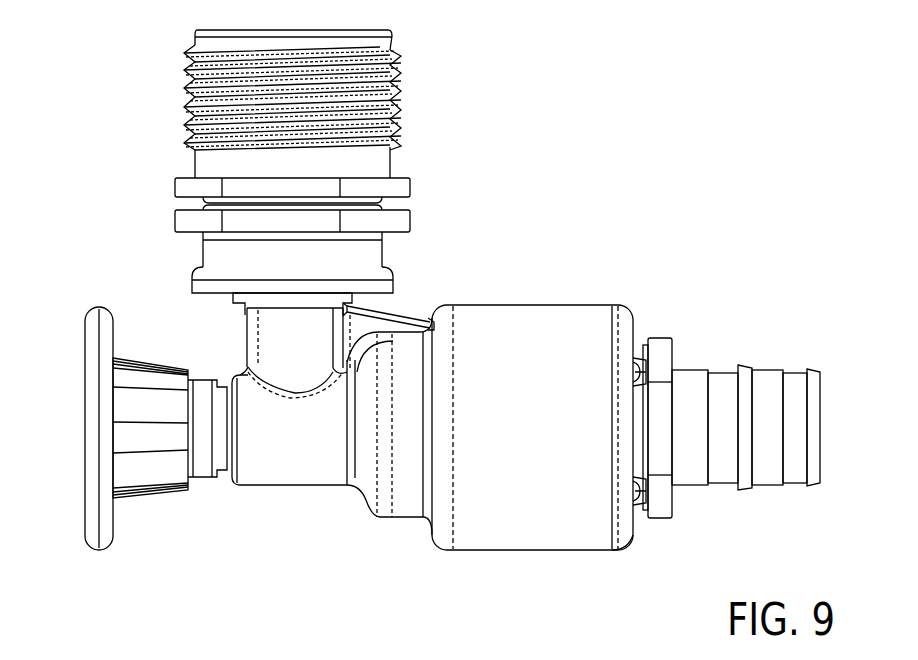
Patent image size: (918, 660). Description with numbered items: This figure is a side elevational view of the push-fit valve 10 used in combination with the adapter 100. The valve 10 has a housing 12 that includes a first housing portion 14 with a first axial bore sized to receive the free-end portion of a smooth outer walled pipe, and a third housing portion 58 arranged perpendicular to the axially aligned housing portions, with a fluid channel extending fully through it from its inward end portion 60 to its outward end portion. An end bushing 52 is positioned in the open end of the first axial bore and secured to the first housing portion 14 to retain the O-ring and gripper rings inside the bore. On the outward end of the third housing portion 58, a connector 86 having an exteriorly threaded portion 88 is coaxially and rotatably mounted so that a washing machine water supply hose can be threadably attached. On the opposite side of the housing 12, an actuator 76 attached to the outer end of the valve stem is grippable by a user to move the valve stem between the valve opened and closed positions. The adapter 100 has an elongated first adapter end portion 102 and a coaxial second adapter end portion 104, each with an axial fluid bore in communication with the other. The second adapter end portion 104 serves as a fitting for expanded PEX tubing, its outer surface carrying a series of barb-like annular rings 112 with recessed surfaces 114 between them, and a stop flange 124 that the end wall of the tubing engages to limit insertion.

The push-fit valve 10 is at (130, 404).
The housing 12 is at (466, 404).
The first housing portion 14 is at (545, 305).
The end bushing 52 is at (617, 527).
The third housing portion 58 is at (237, 323).
The inward end portion 60 is at (263, 345).
The actuator 76 is at (90, 362).
The connector 86 is at (203, 165).
The exteriorly threaded portion 88 is at (185, 90).
The adapter 100 is at (690, 487).
The first adapter end portion 102 is at (641, 362).
The second adapter end portion 104 is at (768, 382).
The annular rings 112 is at (765, 370).
The recessed surfaces 114 is at (723, 370).
The stop flange 124 is at (660, 350).